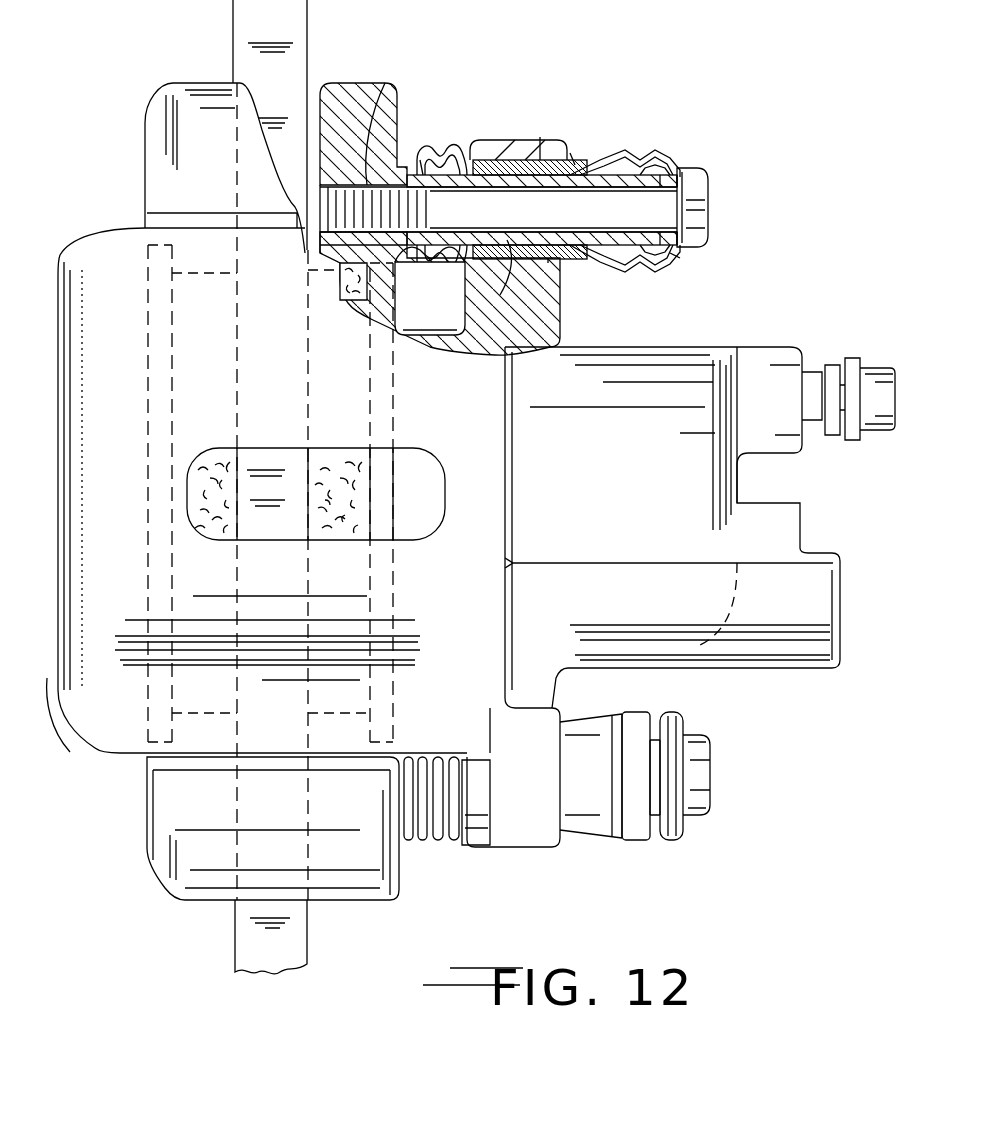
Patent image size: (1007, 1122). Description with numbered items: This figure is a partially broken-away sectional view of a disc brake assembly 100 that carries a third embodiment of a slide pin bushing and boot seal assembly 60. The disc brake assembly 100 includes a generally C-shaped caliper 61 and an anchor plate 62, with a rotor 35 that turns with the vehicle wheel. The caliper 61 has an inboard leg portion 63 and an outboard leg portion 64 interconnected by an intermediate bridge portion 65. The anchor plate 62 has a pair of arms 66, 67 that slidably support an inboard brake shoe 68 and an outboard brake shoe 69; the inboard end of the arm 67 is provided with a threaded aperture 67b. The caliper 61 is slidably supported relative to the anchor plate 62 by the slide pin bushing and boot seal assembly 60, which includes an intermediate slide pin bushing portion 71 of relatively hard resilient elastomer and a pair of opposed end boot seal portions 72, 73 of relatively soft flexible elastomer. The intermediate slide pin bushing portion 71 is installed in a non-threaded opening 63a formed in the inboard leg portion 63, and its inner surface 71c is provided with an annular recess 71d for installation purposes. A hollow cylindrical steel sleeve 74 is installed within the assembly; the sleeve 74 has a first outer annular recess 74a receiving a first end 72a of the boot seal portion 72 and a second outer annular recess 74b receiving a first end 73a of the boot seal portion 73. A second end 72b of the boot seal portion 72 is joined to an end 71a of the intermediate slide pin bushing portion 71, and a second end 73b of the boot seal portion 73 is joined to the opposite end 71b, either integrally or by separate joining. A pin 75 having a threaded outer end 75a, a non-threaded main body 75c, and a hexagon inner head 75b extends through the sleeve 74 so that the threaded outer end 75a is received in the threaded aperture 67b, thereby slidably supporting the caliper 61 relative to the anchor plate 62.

The rotor 35 is at (235, 937).
The slide pin bushing and boot seal assembly 60 is at (620, 143).
The caliper 61 is at (728, 347).
The anchor plate 62 is at (147, 826).
The inboard leg portion 63 is at (562, 333).
The non-threaded opening 63a is at (621, 384).
The outboard leg portion 64 is at (49, 692).
The intermediate bridge portion 65 is at (410, 345).
The arm 66 is at (367, 893).
The arm 67 is at (167, 83).
The threaded aperture 67b is at (348, 193).
The inboard brake shoe 68 is at (393, 592).
The outboard brake shoe 69 is at (142, 332).
The intermediate slide pin bushing portion 71 is at (522, 175).
The end of bushing portion 71a is at (547, 253).
The end of bushing portion 71b is at (500, 295).
The inner surface 71c is at (548, 263).
The annular recess 71d is at (540, 137).
The boot seal portion 72 is at (665, 268).
The first end of boot seal portion 72a is at (670, 253).
The second end of boot seal portion 72b is at (570, 153).
The boot seal portion 73 is at (447, 148).
The first end of boot seal portion 73a is at (423, 162).
The second end of boot seal portion 73b is at (480, 141).
The sleeve 74 is at (660, 238).
The first outer annular recess 74a is at (680, 177).
The second outer annular recess 74b is at (440, 160).
The pin 75 is at (697, 160).
The threaded outer end 75a is at (385, 83).
The hexagon inner head 75b is at (713, 193).
The non-threaded main body 75c is at (625, 200).
The disc brake assembly 100 is at (745, 688).